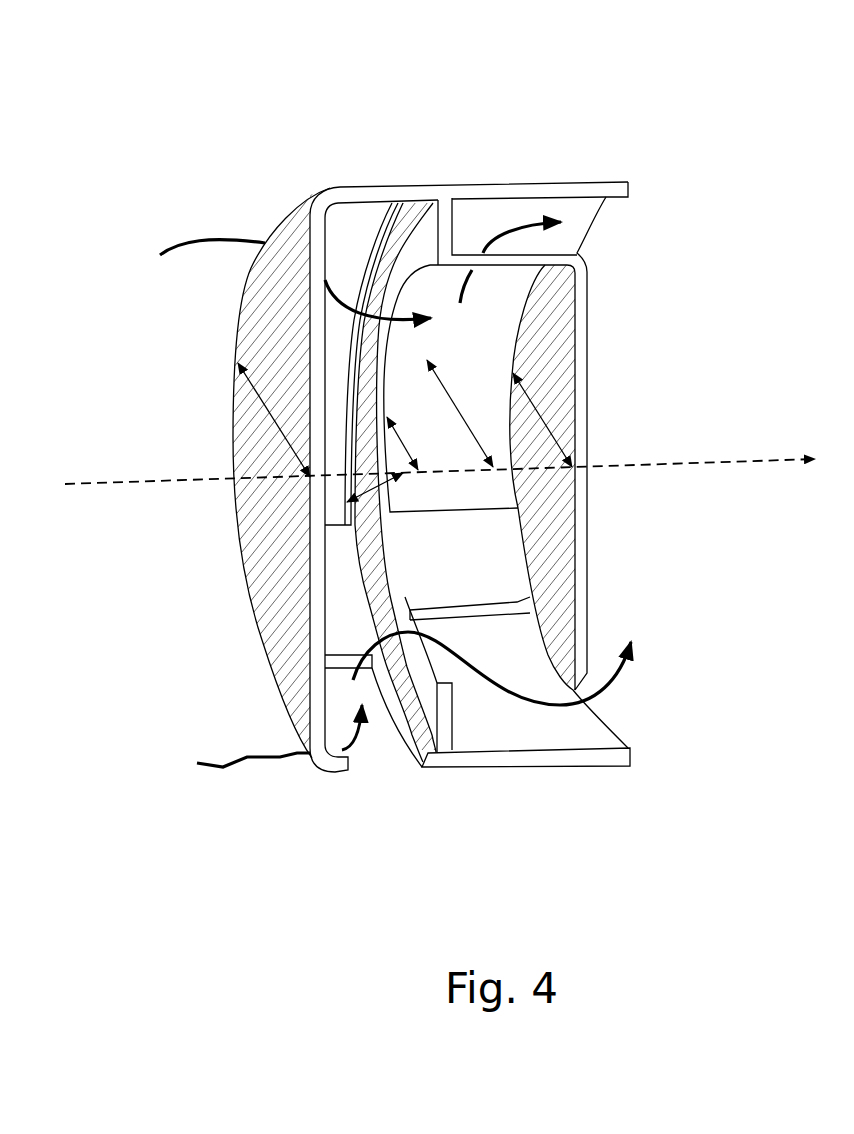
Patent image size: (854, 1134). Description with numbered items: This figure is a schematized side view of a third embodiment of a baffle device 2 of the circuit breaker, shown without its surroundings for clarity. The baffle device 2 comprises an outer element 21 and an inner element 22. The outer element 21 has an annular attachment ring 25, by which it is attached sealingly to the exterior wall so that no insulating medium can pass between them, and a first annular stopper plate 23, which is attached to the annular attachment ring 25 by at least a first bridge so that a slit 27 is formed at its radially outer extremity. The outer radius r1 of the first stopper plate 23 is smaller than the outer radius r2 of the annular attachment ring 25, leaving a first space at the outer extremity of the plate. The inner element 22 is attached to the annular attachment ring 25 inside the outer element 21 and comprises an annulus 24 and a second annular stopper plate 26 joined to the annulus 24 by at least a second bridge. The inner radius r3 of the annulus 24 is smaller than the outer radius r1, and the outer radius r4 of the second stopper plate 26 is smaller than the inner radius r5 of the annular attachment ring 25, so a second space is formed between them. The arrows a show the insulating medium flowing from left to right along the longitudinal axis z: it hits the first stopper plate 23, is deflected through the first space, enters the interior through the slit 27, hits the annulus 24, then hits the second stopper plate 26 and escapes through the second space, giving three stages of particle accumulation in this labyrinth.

The baffle device 2 is at (298, 15).
The outer element 21 is at (587, 190).
The inner element 22 is at (497, 200).
The first annular stopper plate 23 is at (245, 565).
The annulus 24 is at (402, 747).
The annular attachment ring 25 is at (500, 720).
The second annular stopper plate 26 is at (597, 620).
The slit 27 is at (375, 754).
The outer radius of the first stopper plate r1 is at (274, 420).
The outer radius of the annular attachment ring r2 is at (381, 489).
The inner radius of the annulus r3 is at (409, 443).
The outer radius of the second annular stopper plate r4 is at (542, 420).
The inner radius of the annular attachment ring r5 is at (460, 413).
The longitudinal axis z is at (440, 474).
The arrows a is at (395, 490).